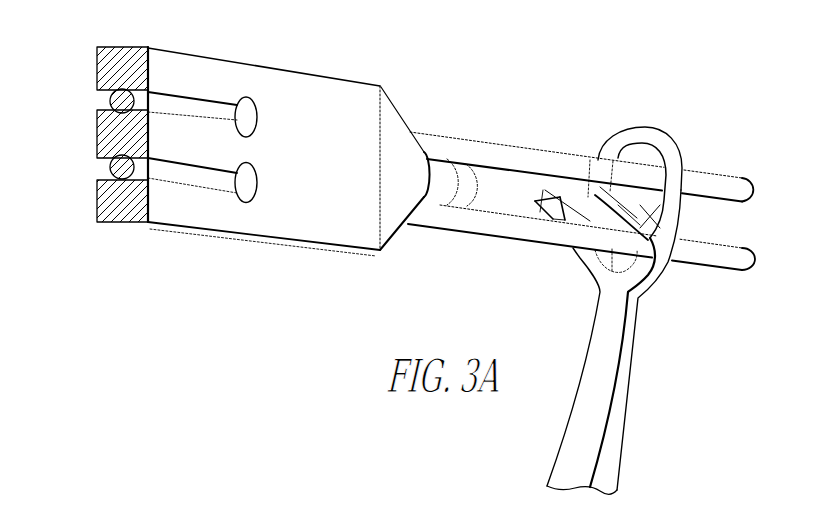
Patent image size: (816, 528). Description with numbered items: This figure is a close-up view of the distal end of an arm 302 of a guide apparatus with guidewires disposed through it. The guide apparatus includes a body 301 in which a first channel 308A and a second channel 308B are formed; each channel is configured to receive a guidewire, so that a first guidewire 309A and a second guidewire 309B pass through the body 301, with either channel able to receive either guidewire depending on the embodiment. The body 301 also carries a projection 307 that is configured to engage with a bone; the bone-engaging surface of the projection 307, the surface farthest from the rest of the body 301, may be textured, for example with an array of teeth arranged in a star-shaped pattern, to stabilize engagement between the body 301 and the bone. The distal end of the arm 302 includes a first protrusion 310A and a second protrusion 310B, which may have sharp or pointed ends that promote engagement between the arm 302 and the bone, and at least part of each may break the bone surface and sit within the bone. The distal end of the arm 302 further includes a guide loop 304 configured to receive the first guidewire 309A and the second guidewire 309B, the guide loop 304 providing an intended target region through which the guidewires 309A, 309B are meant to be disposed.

The body 301 is at (235, 68).
The arm 302 is at (633, 367).
The guide loop 304 is at (655, 130).
The projection 307 is at (437, 190).
The first channel 308A is at (112, 182).
The second channel 308B is at (108, 113).
The first guidewire 309A is at (538, 240).
The second guidewire 309B is at (466, 141).
The first protrusion 310A is at (686, 220).
The second protrusion 310B is at (537, 197).